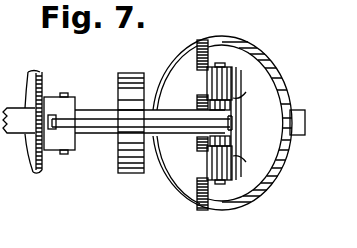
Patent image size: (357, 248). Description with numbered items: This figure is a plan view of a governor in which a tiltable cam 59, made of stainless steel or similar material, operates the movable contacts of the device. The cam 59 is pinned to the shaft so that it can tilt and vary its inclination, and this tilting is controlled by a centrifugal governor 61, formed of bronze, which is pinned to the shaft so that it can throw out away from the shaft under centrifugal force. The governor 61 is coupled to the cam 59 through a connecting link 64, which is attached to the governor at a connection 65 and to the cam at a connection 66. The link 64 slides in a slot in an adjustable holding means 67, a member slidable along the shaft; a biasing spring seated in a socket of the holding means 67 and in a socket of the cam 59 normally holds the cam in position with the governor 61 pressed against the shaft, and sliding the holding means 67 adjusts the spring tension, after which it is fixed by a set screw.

The cam 59 is at (43, 98).
The centrifugal governor 61 is at (254, 198).
The connecting link 64 is at (100, 133).
The connection of link to governor 65 is at (232, 85).
The connection of link to cam 66 is at (61, 130).
The adjustable holding means 67 is at (127, 73).